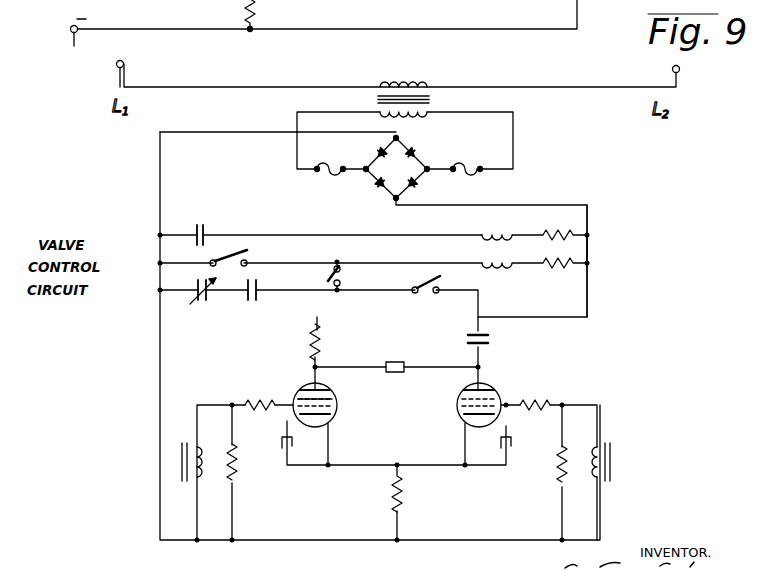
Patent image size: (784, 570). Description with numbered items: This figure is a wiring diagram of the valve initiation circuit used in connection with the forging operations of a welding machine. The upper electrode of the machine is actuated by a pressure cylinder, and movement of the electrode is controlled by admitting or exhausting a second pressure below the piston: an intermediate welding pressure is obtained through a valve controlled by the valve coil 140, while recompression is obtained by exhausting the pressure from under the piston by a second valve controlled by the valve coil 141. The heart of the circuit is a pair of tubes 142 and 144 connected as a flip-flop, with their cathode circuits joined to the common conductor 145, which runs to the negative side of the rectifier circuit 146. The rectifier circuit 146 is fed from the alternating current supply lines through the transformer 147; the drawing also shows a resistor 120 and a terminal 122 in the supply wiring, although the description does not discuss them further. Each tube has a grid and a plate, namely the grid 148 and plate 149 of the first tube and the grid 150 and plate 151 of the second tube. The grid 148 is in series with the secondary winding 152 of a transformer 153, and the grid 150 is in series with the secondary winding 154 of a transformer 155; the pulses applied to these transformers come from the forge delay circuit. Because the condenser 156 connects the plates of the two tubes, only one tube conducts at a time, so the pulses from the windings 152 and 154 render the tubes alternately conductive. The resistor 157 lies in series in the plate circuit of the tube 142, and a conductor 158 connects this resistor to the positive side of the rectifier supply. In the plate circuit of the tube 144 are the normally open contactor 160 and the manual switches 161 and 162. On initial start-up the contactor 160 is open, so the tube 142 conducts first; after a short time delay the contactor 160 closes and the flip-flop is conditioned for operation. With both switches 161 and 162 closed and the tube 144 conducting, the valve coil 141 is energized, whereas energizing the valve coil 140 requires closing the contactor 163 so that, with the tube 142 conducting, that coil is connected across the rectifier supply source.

The resistor 120 is at (178, 28).
The terminal 122 is at (69, 42).
The valve coil 140 is at (500, 228).
The valve coil 141 is at (505, 270).
The tube 142 is at (299, 385).
The tube 144 is at (503, 385).
The common conductor 145 is at (346, 546).
The rectifier circuit 146 is at (370, 190).
The transformer 147 is at (421, 117).
The grid 148 is at (293, 398).
The plate 149 is at (324, 394).
The grid 150 is at (508, 404).
The plate 151 is at (462, 397).
The secondary winding 152 is at (202, 471).
The transformer 153 is at (178, 452).
The secondary winding 154 is at (580, 475).
The transformer 155 is at (612, 463).
The condenser 156 is at (393, 372).
The resistor 157 is at (312, 335).
The conductor 158 is at (590, 250).
The normally open contactor 160 is at (492, 339).
The manual switch 161 is at (336, 260).
The manual switch 162 is at (430, 283).
The contactor 163 is at (200, 225).